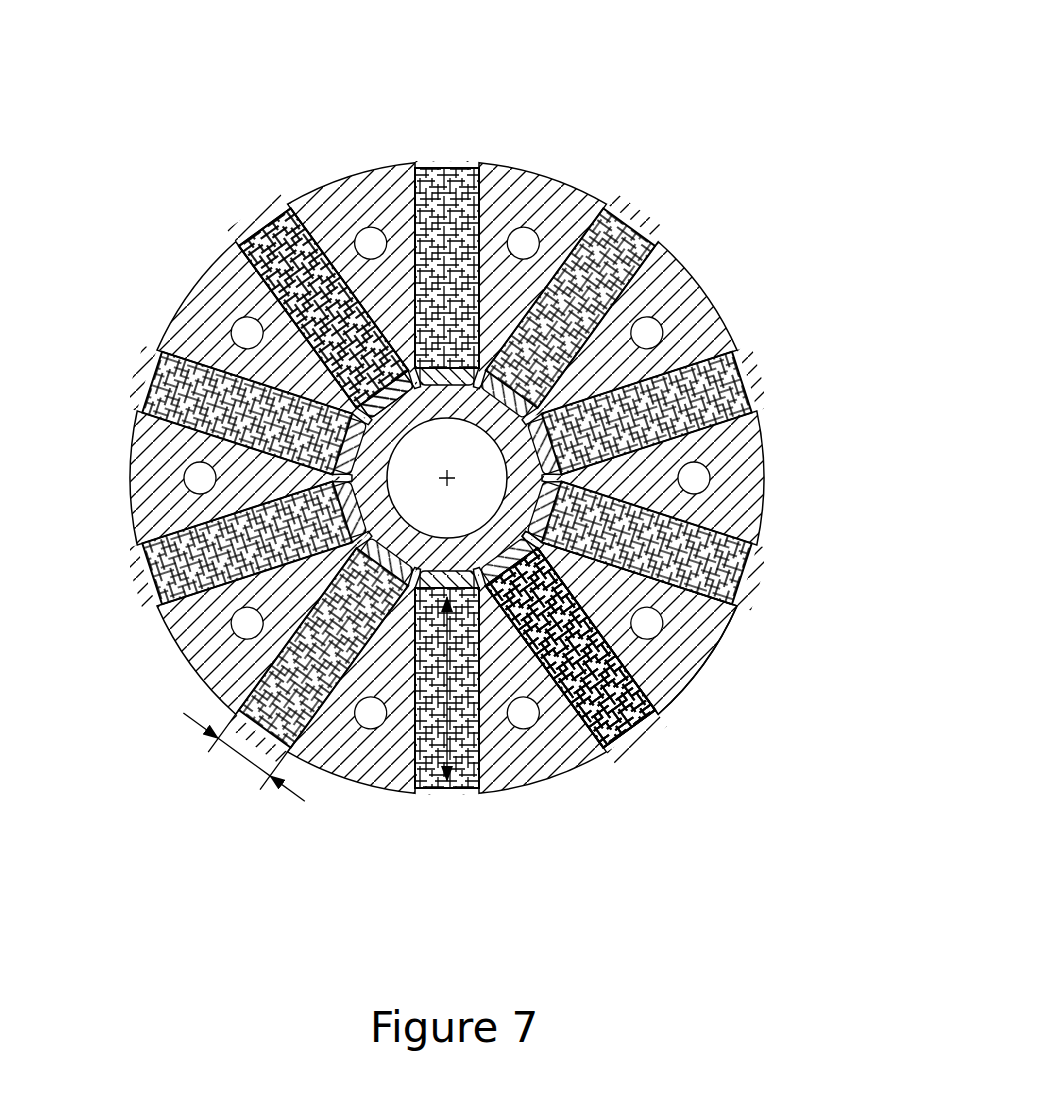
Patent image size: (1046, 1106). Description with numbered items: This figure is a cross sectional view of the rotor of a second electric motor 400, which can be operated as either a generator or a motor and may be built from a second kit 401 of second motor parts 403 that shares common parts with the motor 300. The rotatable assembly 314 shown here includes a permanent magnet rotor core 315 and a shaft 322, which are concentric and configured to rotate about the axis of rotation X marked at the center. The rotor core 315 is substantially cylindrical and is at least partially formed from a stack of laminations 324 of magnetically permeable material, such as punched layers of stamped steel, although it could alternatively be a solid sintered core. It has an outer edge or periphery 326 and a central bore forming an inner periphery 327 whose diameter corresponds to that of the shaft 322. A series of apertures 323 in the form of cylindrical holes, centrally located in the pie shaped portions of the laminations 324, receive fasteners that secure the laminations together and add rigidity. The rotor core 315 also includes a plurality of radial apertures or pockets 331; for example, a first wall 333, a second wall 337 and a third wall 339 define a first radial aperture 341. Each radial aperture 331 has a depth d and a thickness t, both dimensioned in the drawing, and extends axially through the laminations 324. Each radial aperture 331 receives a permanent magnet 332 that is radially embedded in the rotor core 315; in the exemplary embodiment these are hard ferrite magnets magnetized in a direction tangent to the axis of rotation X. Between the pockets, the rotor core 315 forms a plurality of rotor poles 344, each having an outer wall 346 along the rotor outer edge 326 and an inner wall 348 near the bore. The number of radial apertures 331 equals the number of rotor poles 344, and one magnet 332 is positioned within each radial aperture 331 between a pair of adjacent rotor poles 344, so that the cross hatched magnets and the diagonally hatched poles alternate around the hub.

The motor 300 is at (658, 59).
The rotatable assembly 314 is at (503, 120).
The permanent magnet rotor core 315 is at (705, 667).
The shaft 322 is at (220, 553).
The apertures 323 is at (375, 727).
The laminations 324 is at (526, 168).
The outer edge or periphery 326 is at (738, 633).
The inner periphery 327 is at (430, 422).
The radial apertures or pockets 331 is at (461, 798).
The permanent magnets 332 is at (727, 402).
The first wall 333 is at (586, 705).
The second wall 337 is at (634, 729).
The third wall 339 is at (492, 582).
The first radial aperture 341 is at (648, 724).
The rotor poles 344 is at (274, 206).
The outer wall 346 is at (252, 222).
The inner wall 348 is at (400, 415).
The second electric motor 400 is at (256, 74).
The second kit 401 is at (139, 230).
The second motor parts 403 is at (155, 627).
The axis of rotation X is at (445, 476).
The thickness t is at (244, 757).
The depth d is at (445, 703).